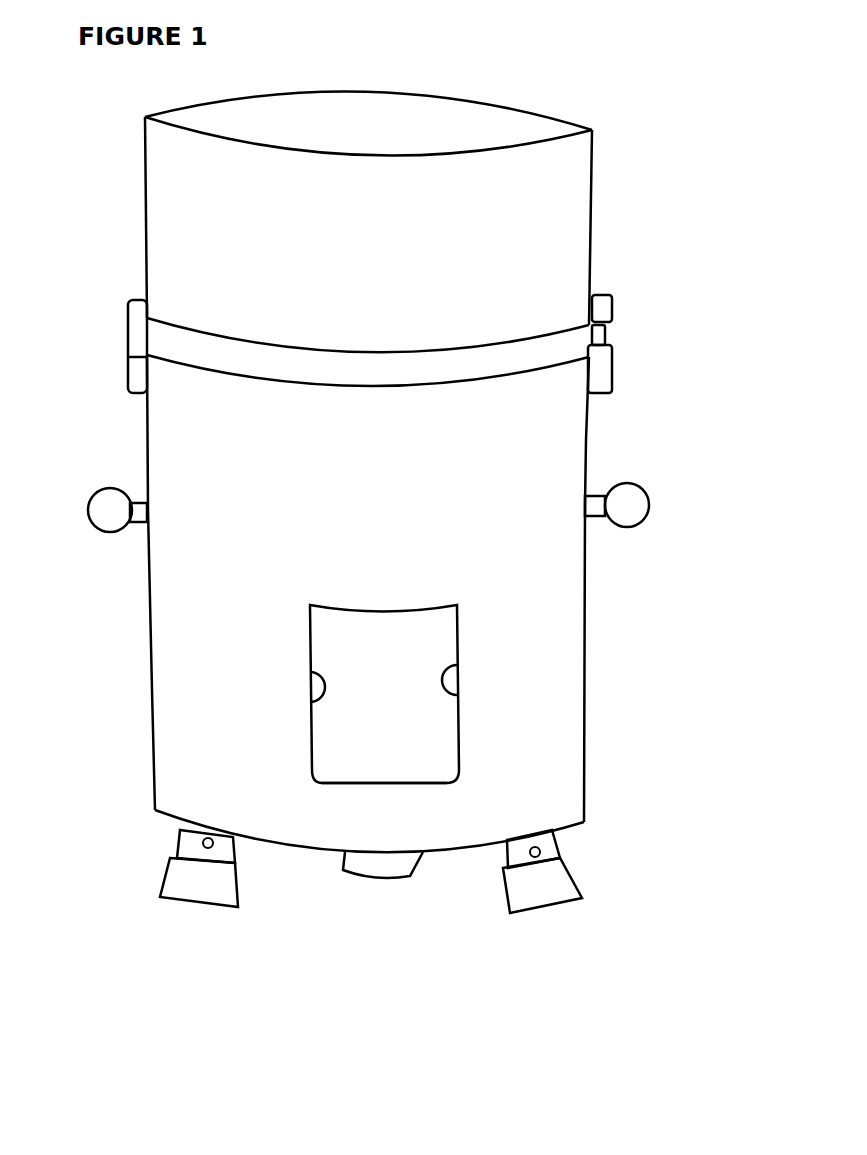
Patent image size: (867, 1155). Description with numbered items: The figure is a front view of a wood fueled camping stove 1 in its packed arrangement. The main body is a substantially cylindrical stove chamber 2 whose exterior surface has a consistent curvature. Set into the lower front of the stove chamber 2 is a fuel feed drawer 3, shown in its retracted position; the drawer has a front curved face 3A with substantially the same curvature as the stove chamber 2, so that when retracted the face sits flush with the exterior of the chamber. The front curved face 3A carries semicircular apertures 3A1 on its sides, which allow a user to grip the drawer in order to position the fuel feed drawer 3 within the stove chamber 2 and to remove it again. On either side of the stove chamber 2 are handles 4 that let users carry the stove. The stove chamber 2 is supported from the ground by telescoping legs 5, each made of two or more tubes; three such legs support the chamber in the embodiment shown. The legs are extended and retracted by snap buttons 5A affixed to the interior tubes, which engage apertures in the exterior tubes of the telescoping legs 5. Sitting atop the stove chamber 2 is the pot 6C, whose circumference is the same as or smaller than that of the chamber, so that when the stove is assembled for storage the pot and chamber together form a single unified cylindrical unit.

The wood fueled camping stove 1 is at (658, 105).
The stove chamber 2 is at (548, 443).
The fuel feed drawer 3 is at (405, 698).
The front curved face 3A is at (342, 758).
The semicircular apertures 3A1 is at (323, 688).
The handles 4 is at (82, 512).
The telescoping legs 5 is at (573, 848).
The snap buttons 5A is at (190, 841).
The pot 6C is at (592, 227).